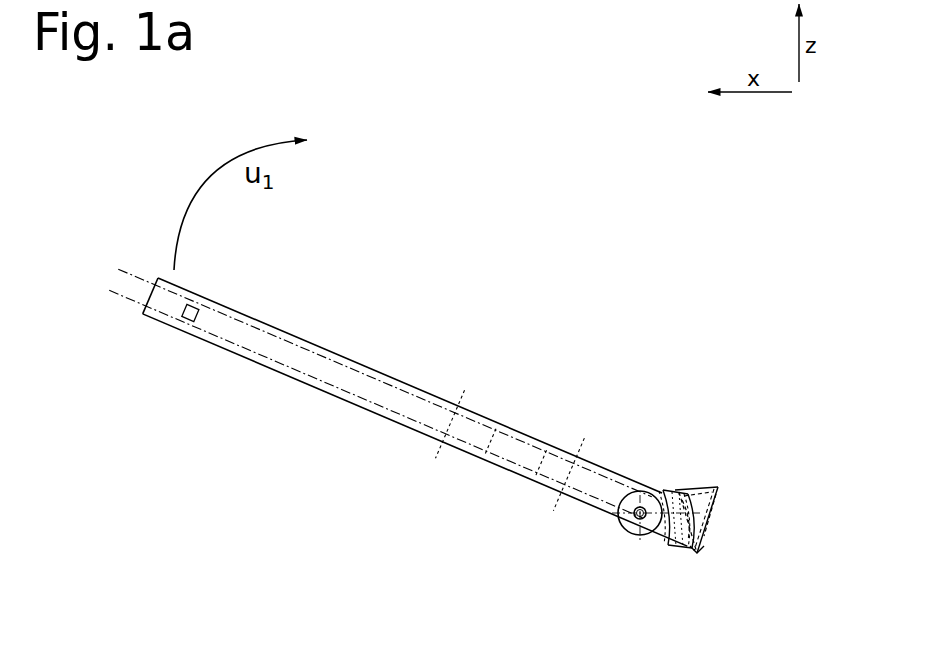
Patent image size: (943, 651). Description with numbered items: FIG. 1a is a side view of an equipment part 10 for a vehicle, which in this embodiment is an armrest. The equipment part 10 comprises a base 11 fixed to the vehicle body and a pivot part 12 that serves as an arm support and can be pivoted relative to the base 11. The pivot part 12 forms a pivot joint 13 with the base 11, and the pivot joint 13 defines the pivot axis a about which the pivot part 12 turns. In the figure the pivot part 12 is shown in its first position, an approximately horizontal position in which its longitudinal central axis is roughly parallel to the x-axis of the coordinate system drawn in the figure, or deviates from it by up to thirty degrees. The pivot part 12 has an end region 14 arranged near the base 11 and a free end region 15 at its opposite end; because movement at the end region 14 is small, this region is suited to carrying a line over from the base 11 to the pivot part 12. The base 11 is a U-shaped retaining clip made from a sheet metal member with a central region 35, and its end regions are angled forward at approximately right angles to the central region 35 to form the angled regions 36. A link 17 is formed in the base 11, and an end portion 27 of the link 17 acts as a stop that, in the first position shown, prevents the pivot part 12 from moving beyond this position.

The equipment part 10 is at (430, 203).
The base 11 is at (700, 496).
The pivot part 12 is at (307, 348).
The pivot joint 13 is at (628, 517).
The end region 14 is at (693, 480).
The free end region 15 is at (145, 322).
The link 17 is at (672, 498).
The end portion 27 is at (686, 500).
The central region 35 is at (714, 522).
The angled regions 36 is at (694, 556).
The pivot axis a is at (640, 520).